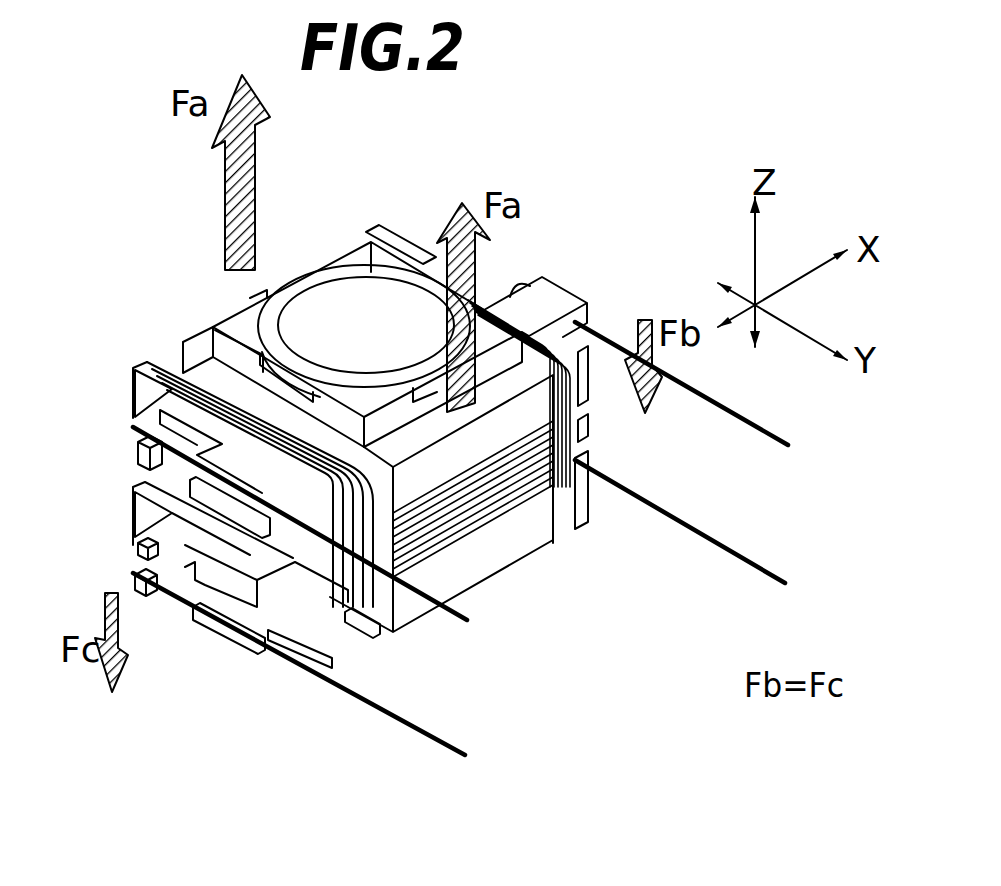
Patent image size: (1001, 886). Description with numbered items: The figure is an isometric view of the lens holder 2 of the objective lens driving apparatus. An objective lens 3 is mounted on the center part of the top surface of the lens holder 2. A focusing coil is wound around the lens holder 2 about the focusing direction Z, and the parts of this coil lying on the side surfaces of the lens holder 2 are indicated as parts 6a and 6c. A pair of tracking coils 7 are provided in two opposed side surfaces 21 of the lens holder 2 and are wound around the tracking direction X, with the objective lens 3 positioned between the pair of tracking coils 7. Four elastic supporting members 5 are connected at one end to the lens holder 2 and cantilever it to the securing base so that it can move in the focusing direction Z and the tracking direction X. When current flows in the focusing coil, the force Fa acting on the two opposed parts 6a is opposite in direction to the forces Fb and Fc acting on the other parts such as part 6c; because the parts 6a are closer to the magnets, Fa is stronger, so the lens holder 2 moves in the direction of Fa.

The lens holder 2 is at (533, 290).
The objective lens 3 is at (363, 307).
The elastic supporting members 5 is at (403, 730).
The parts of the focusing coil 6a is at (483, 513).
The part of the focusing coil 6c is at (293, 553).
The tracking coils 7 is at (180, 373).
The side surfaces 21 is at (380, 625).